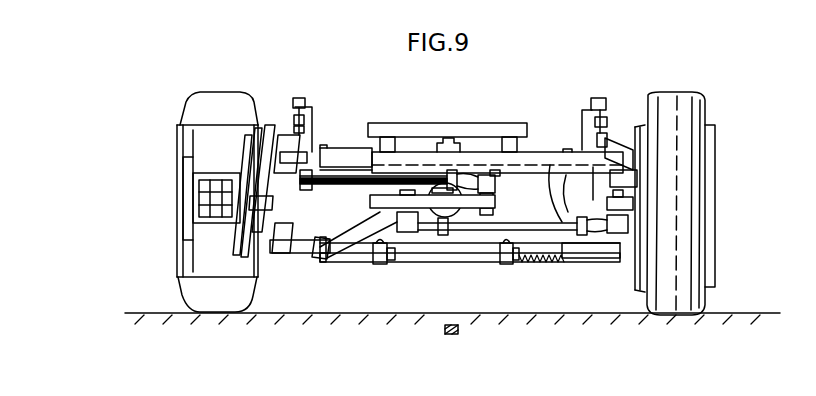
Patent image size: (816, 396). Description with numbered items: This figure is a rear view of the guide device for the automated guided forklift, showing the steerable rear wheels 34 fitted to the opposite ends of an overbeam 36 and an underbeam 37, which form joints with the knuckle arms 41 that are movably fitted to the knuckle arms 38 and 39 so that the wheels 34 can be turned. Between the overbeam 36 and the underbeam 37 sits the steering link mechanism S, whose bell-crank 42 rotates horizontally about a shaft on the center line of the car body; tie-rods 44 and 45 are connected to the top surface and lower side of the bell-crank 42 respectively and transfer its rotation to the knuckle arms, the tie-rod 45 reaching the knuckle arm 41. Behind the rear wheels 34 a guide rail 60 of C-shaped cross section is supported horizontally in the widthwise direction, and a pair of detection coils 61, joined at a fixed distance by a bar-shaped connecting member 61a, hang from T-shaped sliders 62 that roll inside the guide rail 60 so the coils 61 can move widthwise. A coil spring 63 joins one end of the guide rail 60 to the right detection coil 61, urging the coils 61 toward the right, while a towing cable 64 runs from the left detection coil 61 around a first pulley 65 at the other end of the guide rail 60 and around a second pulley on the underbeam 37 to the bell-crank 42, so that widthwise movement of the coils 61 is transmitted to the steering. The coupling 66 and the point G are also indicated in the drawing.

The rear wheels 34 is at (192, 101).
The overbeam 36 is at (353, 157).
The underbeam 37 is at (600, 258).
The knuckle arm 38 is at (270, 127).
The knuckle arm 39 is at (622, 133).
The knuckle arm 41 is at (607, 205).
The bell-crank 42 is at (495, 203).
The tie-rod 44 is at (326, 186).
The tie-rod 45 is at (571, 193).
The guide rail 60 is at (467, 250).
The detection coils 61 is at (379, 264).
The connecting member 61a is at (434, 262).
The sliders 62 is at (396, 263).
The coil spring 63 is at (550, 263).
The towing cable 64 is at (352, 262).
The first pulley 65 is at (312, 253).
The coupling 66 is at (396, 221).
The steering link mechanism S is at (518, 187).
The center of gravity G is at (450, 316).